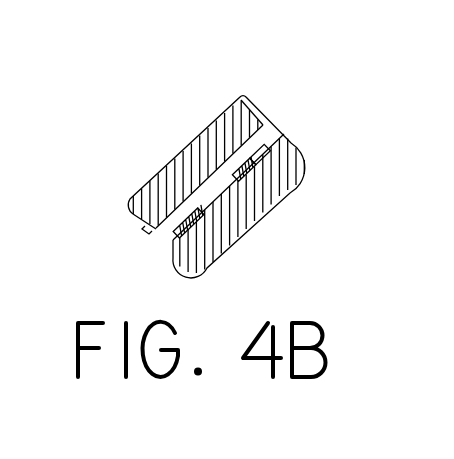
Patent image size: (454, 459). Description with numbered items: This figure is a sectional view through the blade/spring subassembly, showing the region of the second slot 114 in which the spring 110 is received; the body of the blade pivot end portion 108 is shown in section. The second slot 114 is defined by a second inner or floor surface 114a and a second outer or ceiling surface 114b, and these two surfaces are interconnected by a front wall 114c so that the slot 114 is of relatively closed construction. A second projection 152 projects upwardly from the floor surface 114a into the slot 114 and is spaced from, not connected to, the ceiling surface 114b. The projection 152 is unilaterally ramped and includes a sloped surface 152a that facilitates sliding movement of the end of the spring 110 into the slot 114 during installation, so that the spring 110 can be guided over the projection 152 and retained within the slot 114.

The body 108 is at (204, 127).
The spring 110 is at (145, 226).
The second slot 114 is at (157, 240).
The second inner or floor surface 114a is at (253, 155).
The second outer or ceiling surface 114b is at (258, 170).
The front wall 114c is at (267, 128).
The second projection 152 is at (210, 187).
The sloped surface 152a is at (207, 197).